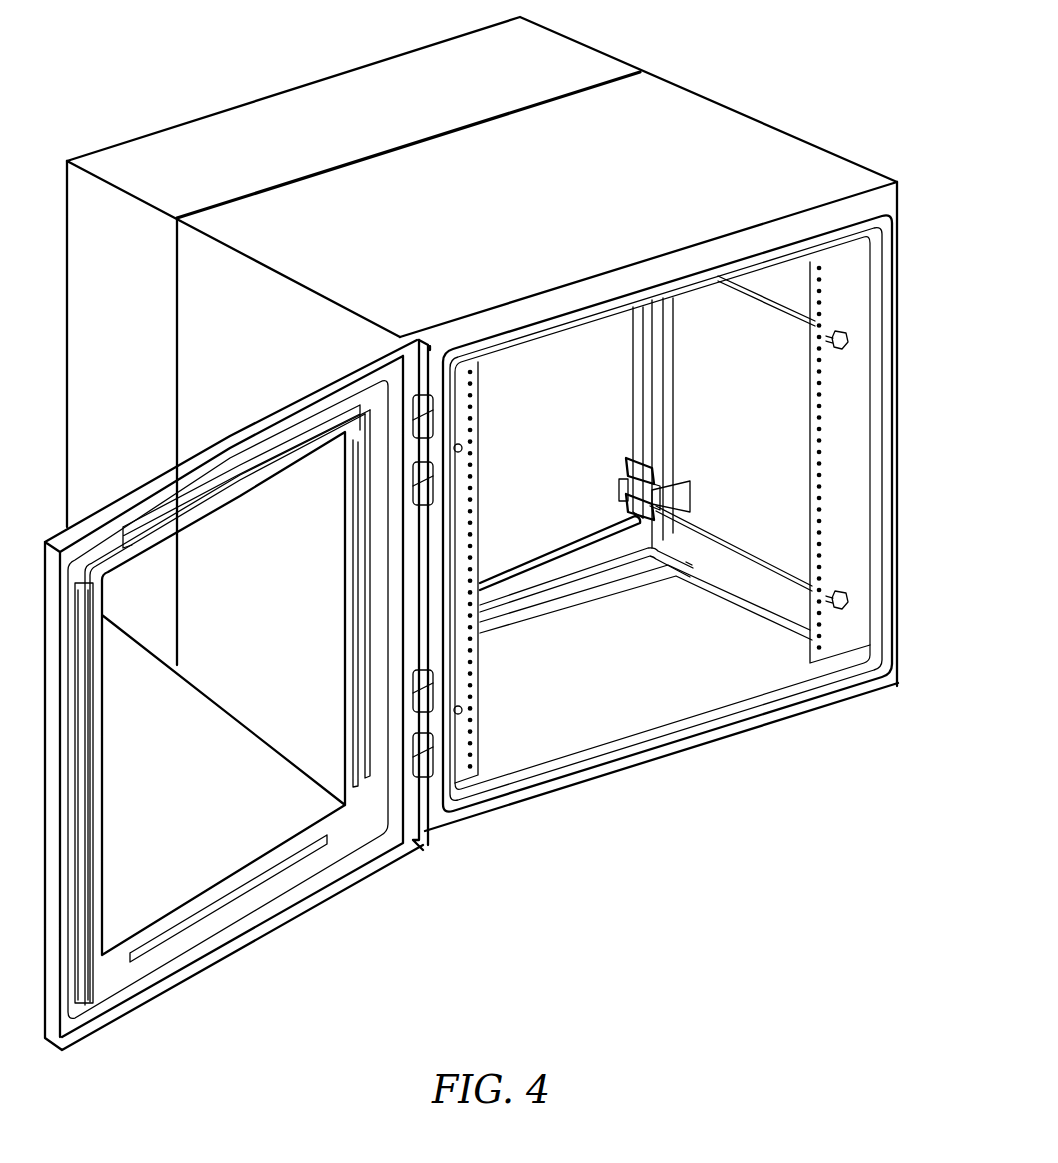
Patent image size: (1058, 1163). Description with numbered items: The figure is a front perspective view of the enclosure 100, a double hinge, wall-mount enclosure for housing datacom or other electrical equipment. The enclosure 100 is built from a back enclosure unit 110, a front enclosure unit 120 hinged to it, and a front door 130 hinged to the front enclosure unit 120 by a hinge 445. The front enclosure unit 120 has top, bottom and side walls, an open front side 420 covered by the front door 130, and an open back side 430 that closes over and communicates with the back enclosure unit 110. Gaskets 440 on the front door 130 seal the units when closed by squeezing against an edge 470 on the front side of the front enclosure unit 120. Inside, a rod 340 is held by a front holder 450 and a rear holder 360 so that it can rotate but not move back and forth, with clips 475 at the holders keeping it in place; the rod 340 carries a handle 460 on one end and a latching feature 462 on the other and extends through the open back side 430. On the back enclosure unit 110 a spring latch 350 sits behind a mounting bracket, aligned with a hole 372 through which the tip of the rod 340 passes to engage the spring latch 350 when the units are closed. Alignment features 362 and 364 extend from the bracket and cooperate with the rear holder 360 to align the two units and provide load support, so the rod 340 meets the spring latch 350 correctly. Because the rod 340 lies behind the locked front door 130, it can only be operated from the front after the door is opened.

The enclosure 100 is at (752, 145).
The back enclosure unit 110 is at (565, 58).
The front enclosure unit 120 is at (618, 738).
The front door 130 is at (340, 883).
The rod 340 is at (758, 574).
The spring latch 350 is at (621, 485).
The rear holder 360 is at (690, 498).
The alignment feature 362 is at (628, 470).
The alignment feature 364 is at (636, 520).
The hole 372 is at (624, 507).
The open front side 420 is at (780, 408).
The open back side 430 is at (513, 537).
The gaskets 440 is at (373, 381).
The hinge 445 is at (436, 368).
The front holder 450 is at (853, 543).
The handle 460 is at (846, 601).
The latching feature 462 is at (654, 486).
The edge 470 is at (777, 257).
The clips 475 is at (688, 568).